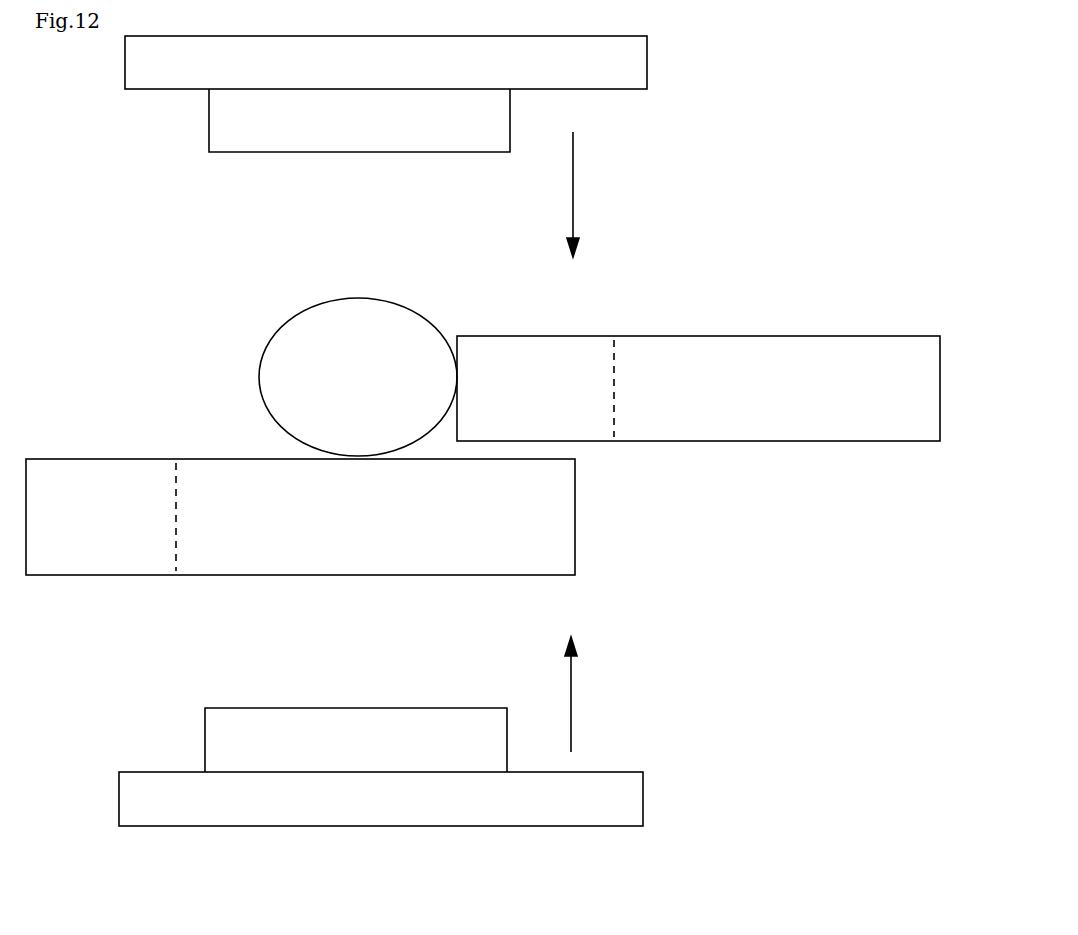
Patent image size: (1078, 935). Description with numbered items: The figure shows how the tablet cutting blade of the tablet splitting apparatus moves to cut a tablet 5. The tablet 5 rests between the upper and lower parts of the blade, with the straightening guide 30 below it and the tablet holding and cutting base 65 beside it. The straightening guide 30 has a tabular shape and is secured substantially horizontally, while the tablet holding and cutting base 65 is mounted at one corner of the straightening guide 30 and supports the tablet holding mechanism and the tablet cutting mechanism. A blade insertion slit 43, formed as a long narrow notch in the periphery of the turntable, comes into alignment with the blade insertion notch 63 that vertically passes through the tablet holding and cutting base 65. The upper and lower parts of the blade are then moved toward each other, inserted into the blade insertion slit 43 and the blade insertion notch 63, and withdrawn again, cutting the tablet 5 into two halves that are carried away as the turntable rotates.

The tablet 5 is at (297, 318).
The straightening guide 30 is at (72, 459).
The blade insertion slit 43 is at (279, 577).
The blade insertion notch 63 is at (513, 336).
The tablet holding and cutting base 65 is at (812, 336).